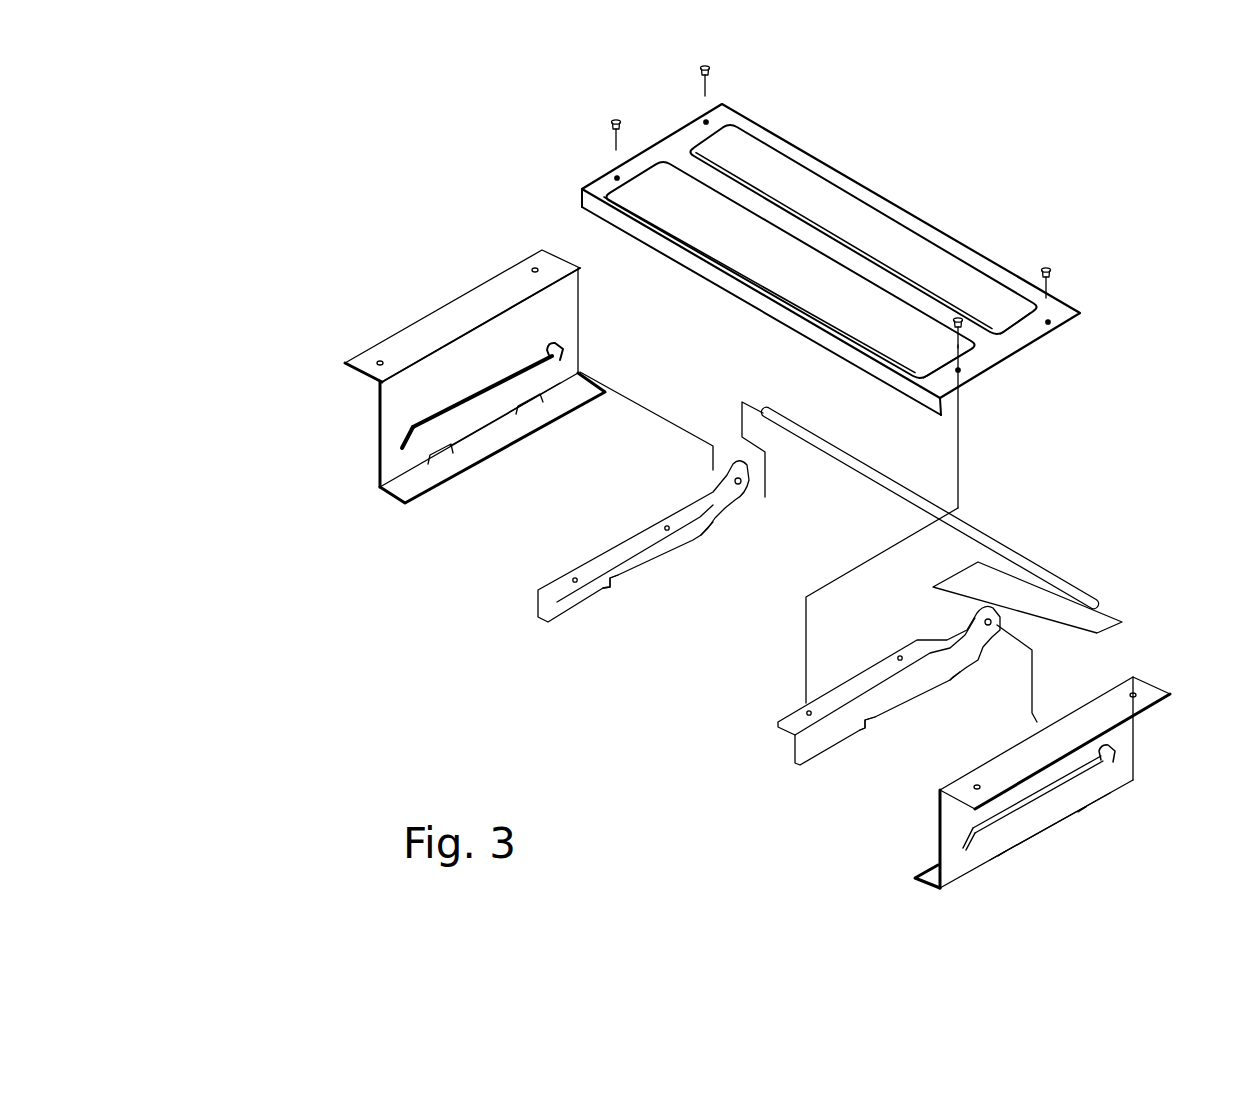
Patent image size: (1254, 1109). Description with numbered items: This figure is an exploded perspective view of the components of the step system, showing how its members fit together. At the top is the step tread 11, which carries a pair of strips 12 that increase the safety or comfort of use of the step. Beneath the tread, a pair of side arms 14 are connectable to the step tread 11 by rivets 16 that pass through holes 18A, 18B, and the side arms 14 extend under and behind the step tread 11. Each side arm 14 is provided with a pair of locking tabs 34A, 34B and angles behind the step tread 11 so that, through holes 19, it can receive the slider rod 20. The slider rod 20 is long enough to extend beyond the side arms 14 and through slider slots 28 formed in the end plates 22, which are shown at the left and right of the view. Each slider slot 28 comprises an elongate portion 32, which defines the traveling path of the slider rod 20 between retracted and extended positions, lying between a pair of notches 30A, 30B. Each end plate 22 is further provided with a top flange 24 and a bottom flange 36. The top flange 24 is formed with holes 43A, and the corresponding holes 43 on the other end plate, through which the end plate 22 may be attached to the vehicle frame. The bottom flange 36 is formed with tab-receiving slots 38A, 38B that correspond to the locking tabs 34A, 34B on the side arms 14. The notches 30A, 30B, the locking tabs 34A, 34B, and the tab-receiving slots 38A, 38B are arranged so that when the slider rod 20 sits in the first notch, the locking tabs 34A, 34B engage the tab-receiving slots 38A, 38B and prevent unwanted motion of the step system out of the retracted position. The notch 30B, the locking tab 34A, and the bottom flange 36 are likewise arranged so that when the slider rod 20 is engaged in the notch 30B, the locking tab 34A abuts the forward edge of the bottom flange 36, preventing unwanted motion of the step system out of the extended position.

The step tread 11 is at (860, 183).
The strips 12 is at (890, 237).
The side arms 14 is at (540, 605).
The rivets 16 is at (703, 70).
The holes 18A is at (707, 122).
The holes 18B is at (667, 528).
The holes 19 is at (740, 486).
The slider rod 20 is at (993, 543).
The end plates 22 is at (380, 432).
The top flange 24 is at (355, 363).
The slider slots 28 is at (470, 388).
The notch 30A is at (560, 345).
The notch 30B is at (408, 424).
The elongate portion 32 is at (550, 388).
The locking tab 34A is at (703, 537).
The locking tab 34B is at (610, 593).
The bottom flange 36 is at (413, 482).
The tab-receiving slot 38A is at (537, 405).
The tab-receiving slot 38B is at (450, 458).
The mounting holes 43 is at (977, 787).
The holes 43A is at (380, 363).